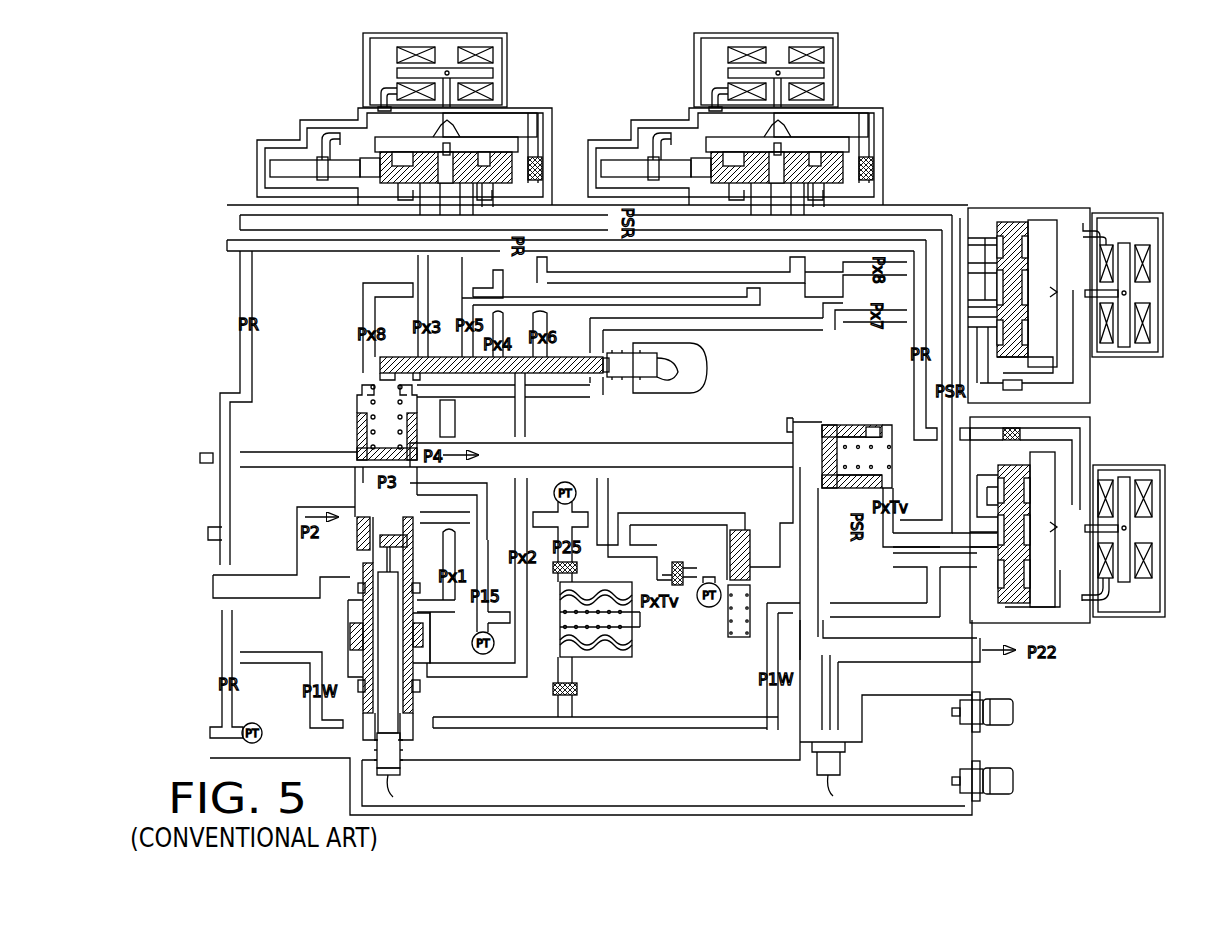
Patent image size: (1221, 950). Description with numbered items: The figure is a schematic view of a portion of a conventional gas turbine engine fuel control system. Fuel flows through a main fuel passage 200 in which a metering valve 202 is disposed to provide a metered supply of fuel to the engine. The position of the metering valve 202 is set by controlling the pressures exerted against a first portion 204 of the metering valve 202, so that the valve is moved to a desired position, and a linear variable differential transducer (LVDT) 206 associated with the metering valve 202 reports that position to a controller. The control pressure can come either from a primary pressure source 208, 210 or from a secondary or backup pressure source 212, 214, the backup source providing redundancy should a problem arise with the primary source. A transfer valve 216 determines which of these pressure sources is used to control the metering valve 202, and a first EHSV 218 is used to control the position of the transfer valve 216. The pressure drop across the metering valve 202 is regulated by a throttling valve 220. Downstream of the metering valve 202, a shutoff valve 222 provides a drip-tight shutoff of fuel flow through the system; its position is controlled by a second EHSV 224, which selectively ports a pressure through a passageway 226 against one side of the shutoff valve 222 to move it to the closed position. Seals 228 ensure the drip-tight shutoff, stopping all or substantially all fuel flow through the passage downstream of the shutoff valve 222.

The main fuel passage 200 is at (250, 598).
The metering valve 202 is at (357, 537).
The first portion of the metering valve 204 is at (352, 653).
The linear variable differential transducer (LVDT) 206 is at (402, 752).
The primary pressure source 208 is at (417, 269).
The primary pressure source 210 is at (500, 283).
The secondary or backup pressure source 212 is at (712, 305).
The secondary or backup pressure source 214 is at (733, 273).
The transfer valve 216 is at (397, 373).
The first EHSV 218 is at (1103, 370).
The throttling valve 220 is at (355, 430).
The shutoff valve 222 is at (857, 422).
The second EHSV 224 is at (1173, 627).
The passageway 226 is at (917, 547).
The seals 228 is at (873, 422).